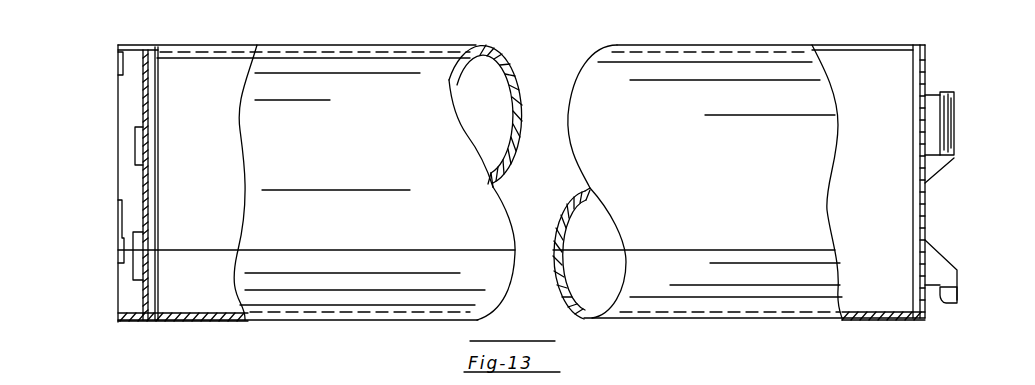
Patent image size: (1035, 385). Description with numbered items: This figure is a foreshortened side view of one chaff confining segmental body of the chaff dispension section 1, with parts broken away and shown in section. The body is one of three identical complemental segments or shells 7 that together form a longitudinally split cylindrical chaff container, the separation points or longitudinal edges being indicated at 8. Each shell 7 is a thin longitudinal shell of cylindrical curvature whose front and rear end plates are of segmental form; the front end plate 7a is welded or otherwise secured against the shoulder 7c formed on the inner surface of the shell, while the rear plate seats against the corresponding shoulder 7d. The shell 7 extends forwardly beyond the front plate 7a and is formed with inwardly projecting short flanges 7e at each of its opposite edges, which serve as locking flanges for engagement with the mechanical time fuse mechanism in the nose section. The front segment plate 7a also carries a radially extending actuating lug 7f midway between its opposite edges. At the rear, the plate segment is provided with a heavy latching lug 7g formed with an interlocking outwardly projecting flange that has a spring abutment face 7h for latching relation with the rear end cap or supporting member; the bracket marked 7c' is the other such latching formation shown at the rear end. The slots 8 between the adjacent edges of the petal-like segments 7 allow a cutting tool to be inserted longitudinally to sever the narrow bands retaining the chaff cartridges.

The chaff dispension section 1 is at (710, 45).
The segment or complemental shell 7 is at (506, 90).
The front end plate 7a is at (148, 98).
The shoulder 7c is at (521, 179).
The bracket 7c' is at (967, 196).
The shoulder 7d is at (925, 47).
The locking flange 7e is at (118, 60).
The actuating lug 7f is at (137, 150).
The latching lug 7g is at (945, 168).
The spring abutment face 7h is at (948, 92).
The separation point or longitudinal edge 8 is at (193, 48).